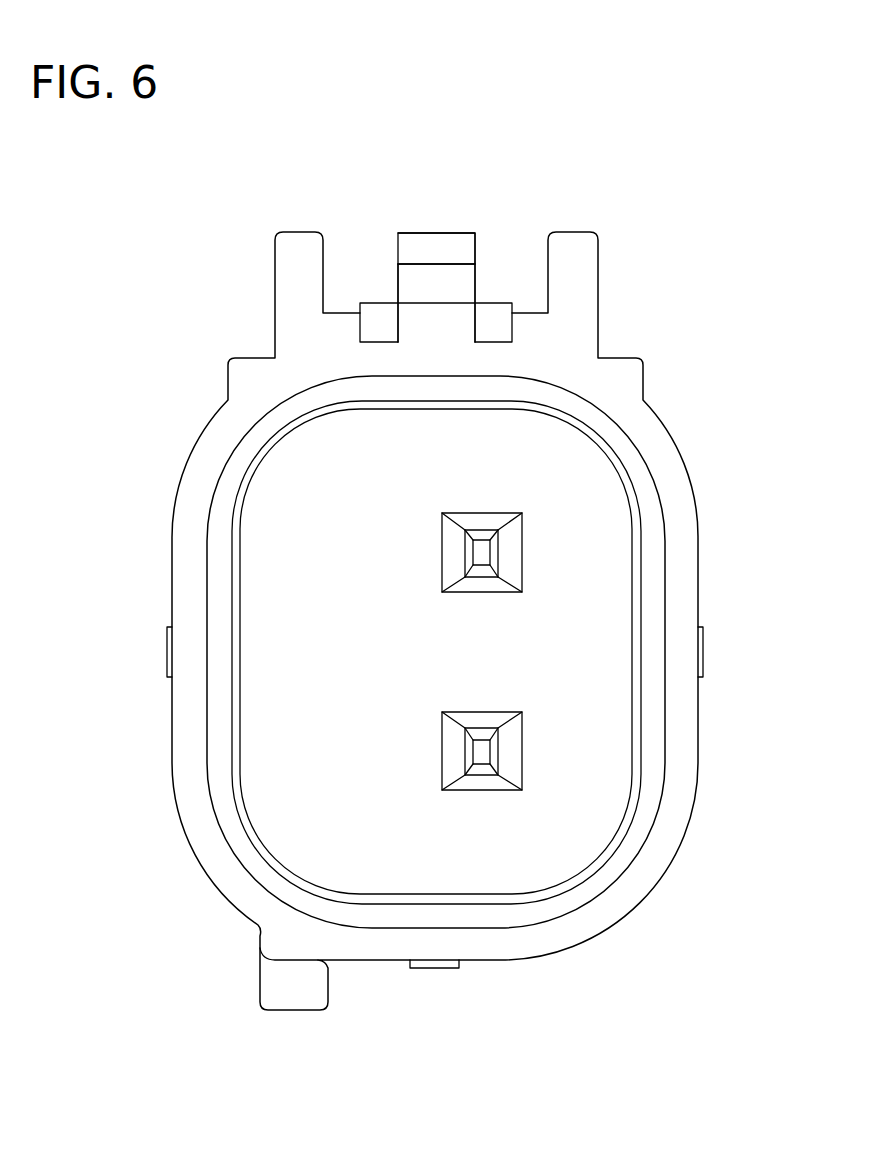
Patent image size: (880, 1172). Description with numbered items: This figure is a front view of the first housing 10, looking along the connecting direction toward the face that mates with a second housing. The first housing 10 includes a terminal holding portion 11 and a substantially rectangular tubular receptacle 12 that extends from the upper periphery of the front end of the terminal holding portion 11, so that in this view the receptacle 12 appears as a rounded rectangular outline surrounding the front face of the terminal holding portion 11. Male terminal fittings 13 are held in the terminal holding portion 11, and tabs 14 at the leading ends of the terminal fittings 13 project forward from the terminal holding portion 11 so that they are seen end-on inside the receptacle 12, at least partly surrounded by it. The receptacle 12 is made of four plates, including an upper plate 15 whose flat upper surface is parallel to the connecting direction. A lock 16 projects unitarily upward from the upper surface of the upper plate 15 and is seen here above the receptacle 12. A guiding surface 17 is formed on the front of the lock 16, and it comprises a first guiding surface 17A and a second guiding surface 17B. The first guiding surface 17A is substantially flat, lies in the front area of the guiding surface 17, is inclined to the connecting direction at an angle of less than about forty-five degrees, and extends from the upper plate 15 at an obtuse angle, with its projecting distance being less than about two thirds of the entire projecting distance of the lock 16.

The first housing 10 is at (448, 566).
The terminal holding portion 11 is at (598, 488).
The receptacle 12 is at (687, 725).
The male terminal fitting 13 is at (513, 555).
The tab 14 is at (483, 557).
The upper plate 15 is at (438, 353).
The lock 16 is at (431, 251).
The guiding surface 17 is at (493, 232).
The first guiding surface 17A is at (467, 284).
The second guiding surface 17B is at (467, 247).